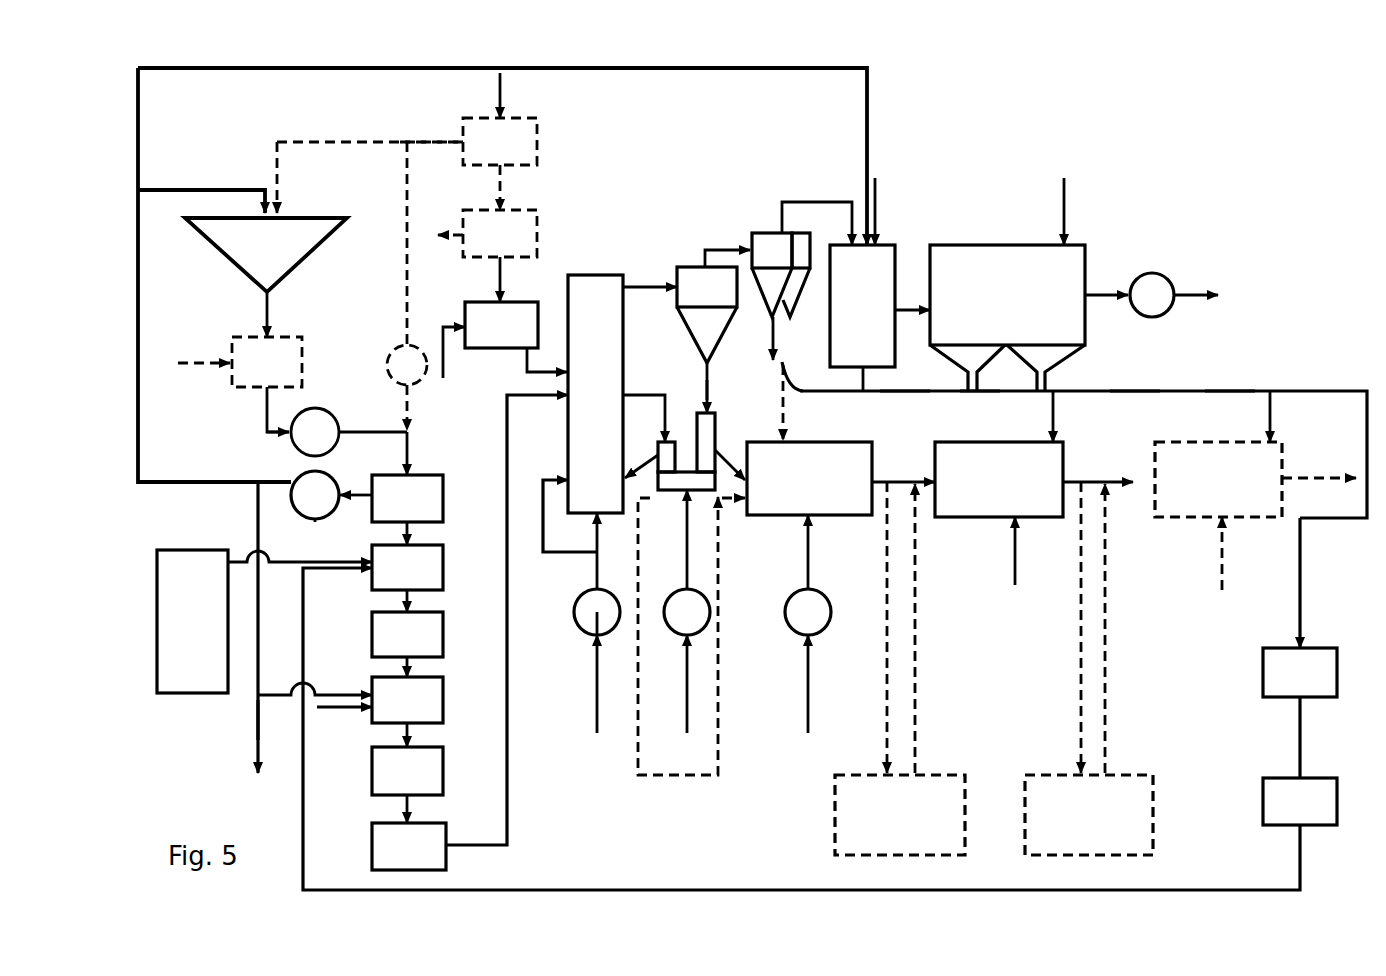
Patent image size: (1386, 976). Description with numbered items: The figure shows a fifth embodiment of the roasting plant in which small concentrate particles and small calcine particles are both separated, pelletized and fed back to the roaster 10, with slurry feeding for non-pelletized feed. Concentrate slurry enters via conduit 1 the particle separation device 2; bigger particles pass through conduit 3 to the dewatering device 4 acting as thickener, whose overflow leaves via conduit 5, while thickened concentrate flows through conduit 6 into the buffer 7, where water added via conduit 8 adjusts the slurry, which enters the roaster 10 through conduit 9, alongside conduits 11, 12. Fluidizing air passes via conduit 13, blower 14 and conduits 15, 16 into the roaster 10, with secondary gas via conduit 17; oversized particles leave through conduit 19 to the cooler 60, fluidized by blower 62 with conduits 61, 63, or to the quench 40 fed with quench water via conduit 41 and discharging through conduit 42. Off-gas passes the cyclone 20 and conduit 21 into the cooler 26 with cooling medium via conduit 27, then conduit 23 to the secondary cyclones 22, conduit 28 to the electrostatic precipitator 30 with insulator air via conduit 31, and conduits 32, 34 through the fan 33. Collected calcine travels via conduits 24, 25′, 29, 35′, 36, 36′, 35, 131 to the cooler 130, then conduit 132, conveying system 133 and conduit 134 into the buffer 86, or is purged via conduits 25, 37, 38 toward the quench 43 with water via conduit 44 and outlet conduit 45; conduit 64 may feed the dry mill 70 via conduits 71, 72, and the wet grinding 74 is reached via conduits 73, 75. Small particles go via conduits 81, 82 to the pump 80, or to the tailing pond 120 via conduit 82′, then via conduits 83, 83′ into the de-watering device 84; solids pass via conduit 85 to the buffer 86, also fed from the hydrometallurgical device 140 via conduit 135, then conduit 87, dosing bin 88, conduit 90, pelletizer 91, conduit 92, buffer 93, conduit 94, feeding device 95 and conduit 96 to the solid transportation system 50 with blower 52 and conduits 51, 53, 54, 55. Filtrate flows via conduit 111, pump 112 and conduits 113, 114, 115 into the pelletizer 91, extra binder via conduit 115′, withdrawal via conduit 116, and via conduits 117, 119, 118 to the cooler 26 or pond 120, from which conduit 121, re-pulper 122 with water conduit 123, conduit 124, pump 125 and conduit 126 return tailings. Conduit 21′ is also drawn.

The conduit 1 is at (500, 92).
The particle separation device 2 is at (537, 142).
The conduit 3 is at (500, 187).
The dewatering device 4 is at (537, 235).
The conduit 5 is at (453, 235).
The conduit 6 is at (500, 277).
The buffer 7 is at (470, 303).
The conduit 8 is at (454, 353).
The conduit 9 is at (524, 372).
The roaster 10 is at (612, 275).
The conduit 11 is at (653, 287).
The conduit 12 is at (650, 395).
The conduit 13 is at (595, 688).
The blower 14 is at (574, 612).
The conduit 15 is at (595, 578).
The conduit 16 is at (595, 537).
The conduit 17 is at (553, 480).
The conduit 19 is at (668, 775).
The cyclone 20 is at (687, 267).
The conduit 21 is at (722, 245).
The solids line 21′ is at (705, 387).
The secondary cyclone(s) 22 is at (770, 233).
The conduit 23 is at (818, 202).
The conduit 24 is at (771, 350).
The conduit 25 is at (780, 380).
The conduit 25′ is at (793, 378).
The cooler 26 is at (896, 250).
The conduit 27 is at (878, 203).
The conduit 28 is at (910, 310).
The conduit 29 is at (860, 380).
The electrostatic precipitator 30 is at (1013, 245).
The conduit 31 is at (1066, 203).
The conduit 32 is at (1105, 295).
The fan 33 is at (1152, 273).
The conduit 34 is at (1195, 295).
The conduit 35 is at (835, 396).
The conduit 35′ is at (905, 396).
The conduit 36 is at (968, 380).
The conduit 36′ is at (1037, 380).
The conduit 37 is at (1053, 415).
The conduit 38 is at (1272, 415).
The quench 40 is at (955, 442).
The conduit 41 is at (1013, 547).
The conduit 42 is at (1093, 482).
The quench 43 is at (1180, 442).
The conduit 44 is at (1220, 548).
The conduit 45 is at (1313, 478).
The solid transportation system 50 is at (676, 470).
The conduit 51 is at (685, 688).
The blower 52 is at (672, 592).
The conduit 53 is at (685, 537).
The conduit 54 is at (643, 463).
The conduit 55 is at (735, 458).
The cooler 60 is at (765, 442).
The conduit 61 is at (805, 697).
The blower 62 is at (785, 612).
The conduit 63 is at (805, 562).
The conduit 64 is at (905, 480).
The dry mill 70 is at (835, 815).
The conduit 71 is at (885, 568).
The conduit 72 is at (918, 568).
The conduit 73 is at (1078, 568).
The wet grinding 74 is at (1025, 815).
The conduit 75 is at (1108, 568).
The pump 80 is at (403, 345).
The conduit 81 is at (437, 142).
The conduit 82 is at (405, 259).
The conduit 82′ is at (372, 142).
The conduit 83 is at (410, 412).
The conduit 83′ is at (410, 452).
The de-watering device 84 is at (443, 498).
The conduit 85 is at (412, 533).
The buffer 86 is at (443, 568).
The conduit 87 is at (412, 600).
The dosing bin(s) 88 is at (443, 635).
The conduit 90 is at (412, 668).
The pelletizer 91 is at (443, 700).
The conduit 92 is at (412, 737).
The buffer 93 is at (443, 770).
The conduit 94 is at (412, 810).
The feeding device 95 is at (372, 845).
The conduit 96 is at (509, 810).
The conduit 111 is at (352, 500).
The pump 112 is at (315, 520).
The conduit 113 is at (282, 484).
The conduit 114 is at (256, 518).
The conduit 115 is at (278, 700).
The conduit 115′ is at (347, 712).
The conduit 116 is at (256, 720).
The conduit 117 is at (175, 482).
The conduit 118 is at (195, 190).
The conduit 119 is at (327, 68).
The tailing pond/dam or area 120 is at (313, 218).
The conduit 121 is at (267, 318).
The re-pulper 122 is at (241, 337).
The conduit 123 is at (193, 365).
The conduit 124 is at (275, 437).
The pump 125 is at (332, 408).
The conduit 126 is at (352, 437).
The cooler 130 is at (1263, 672).
The conduit 131 is at (1298, 568).
The conduit 132 is at (1298, 732).
The conveying system 133 is at (1263, 800).
The conduit 134 is at (610, 890).
The conduit 135 is at (277, 568).
The hydrometallurgical device 140 is at (190, 693).